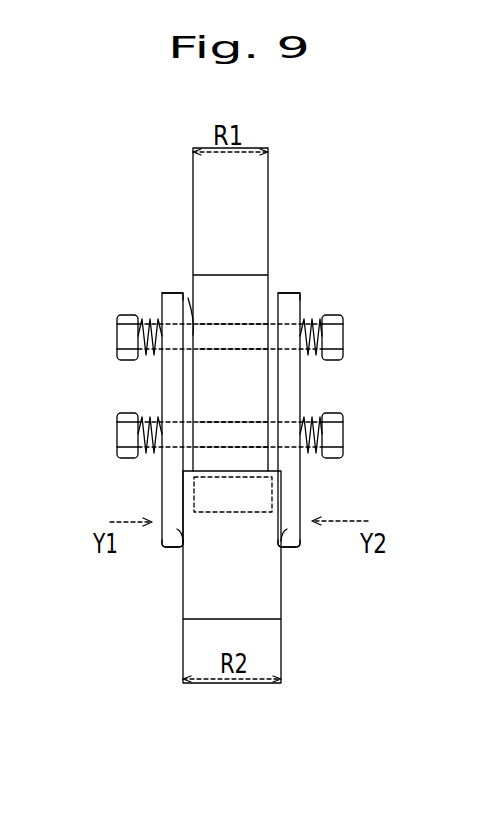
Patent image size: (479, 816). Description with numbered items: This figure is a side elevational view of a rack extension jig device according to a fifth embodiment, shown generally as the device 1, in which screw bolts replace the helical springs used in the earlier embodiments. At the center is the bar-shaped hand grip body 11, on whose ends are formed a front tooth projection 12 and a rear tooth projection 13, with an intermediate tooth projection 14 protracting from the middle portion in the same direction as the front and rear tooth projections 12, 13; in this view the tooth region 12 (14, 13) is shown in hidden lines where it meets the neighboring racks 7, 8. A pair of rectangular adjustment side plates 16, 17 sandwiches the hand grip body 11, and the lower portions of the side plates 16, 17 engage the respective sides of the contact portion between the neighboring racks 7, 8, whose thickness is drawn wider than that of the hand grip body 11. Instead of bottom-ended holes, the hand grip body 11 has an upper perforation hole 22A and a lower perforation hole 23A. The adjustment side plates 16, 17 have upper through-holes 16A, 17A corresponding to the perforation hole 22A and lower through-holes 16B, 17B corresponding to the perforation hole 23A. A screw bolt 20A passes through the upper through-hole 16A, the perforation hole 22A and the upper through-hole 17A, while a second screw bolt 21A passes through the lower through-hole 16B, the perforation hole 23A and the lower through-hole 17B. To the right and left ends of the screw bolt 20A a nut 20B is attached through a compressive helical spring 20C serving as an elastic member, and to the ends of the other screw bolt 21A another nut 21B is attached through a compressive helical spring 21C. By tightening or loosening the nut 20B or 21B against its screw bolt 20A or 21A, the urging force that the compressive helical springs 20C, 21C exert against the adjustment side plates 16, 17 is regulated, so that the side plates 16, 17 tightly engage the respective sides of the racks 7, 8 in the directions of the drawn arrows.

The assembly 1 is at (303, 275).
The rack 7 is at (281, 577).
The rack 8 is at (268, 582).
The hand grip body 11 is at (228, 272).
The front tooth projection 12 is at (334, 497).
The rear tooth projection 13 is at (265, 497).
The intermediate tooth projection 14 is at (233, 494).
The adjustment side plate 16 is at (162, 378).
The upper through-hole 16A is at (158, 300).
The lower through-hole 16B is at (160, 458).
The adjustment side plate 17 is at (300, 368).
The upper through-hole 17A is at (310, 294).
The lower through-hole 17B is at (308, 455).
The screw bolt 20A is at (188, 298).
The nut 20B is at (117, 334).
The compressive helical spring 20C is at (137, 318).
The screw bolt 21A is at (183, 473).
The nut 21B is at (117, 437).
The compressive helical spring 21C is at (137, 416).
The perforation hole 22A is at (253, 320).
The perforation hole 23A is at (240, 432).